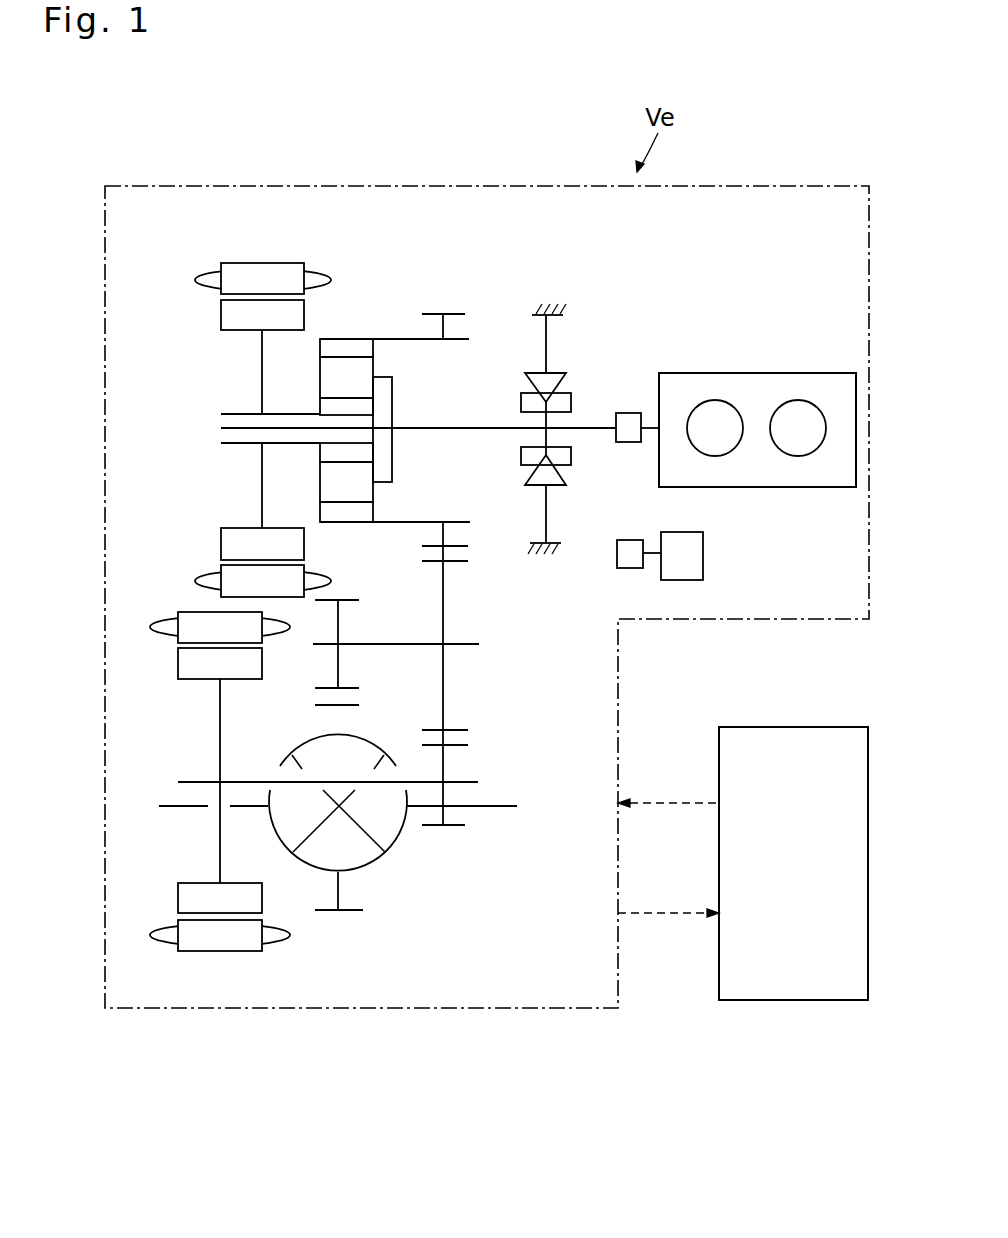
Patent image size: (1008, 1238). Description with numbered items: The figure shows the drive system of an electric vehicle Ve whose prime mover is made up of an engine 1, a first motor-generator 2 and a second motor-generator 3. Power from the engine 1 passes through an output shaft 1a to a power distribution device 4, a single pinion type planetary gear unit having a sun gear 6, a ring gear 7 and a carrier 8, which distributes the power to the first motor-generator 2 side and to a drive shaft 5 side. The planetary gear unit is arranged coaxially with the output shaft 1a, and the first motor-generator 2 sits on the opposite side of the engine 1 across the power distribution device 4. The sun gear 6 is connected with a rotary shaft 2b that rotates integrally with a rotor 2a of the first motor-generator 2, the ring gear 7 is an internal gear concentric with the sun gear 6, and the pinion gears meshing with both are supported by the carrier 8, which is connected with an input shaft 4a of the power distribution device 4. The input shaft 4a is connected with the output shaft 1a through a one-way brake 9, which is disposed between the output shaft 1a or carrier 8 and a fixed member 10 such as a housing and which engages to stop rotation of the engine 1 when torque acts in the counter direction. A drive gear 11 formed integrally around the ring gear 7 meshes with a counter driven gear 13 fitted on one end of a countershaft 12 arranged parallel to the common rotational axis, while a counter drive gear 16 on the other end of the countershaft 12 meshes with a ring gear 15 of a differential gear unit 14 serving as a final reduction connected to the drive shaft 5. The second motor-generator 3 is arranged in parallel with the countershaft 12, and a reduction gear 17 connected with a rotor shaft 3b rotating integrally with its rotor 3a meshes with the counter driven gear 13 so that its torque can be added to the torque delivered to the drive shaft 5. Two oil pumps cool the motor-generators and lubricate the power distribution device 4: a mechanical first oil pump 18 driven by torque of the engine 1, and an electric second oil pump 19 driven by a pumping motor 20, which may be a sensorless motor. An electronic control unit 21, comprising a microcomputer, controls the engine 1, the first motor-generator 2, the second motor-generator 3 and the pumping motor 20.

The engine 1 is at (752, 478).
The output shaft 1a is at (597, 432).
The first motor-generator 2 is at (178, 305).
The rotor 2a is at (222, 548).
The rotary shaft 2b is at (290, 445).
The second motor-generator 3 is at (175, 708).
The rotor 3a is at (180, 898).
The rotor shaft 3b is at (252, 780).
The power distribution device 4 is at (384, 300).
The input shaft 4a is at (456, 427).
The drive shaft 5 is at (168, 805).
The sun gear 6 is at (325, 408).
The ring gear 7 is at (347, 338).
The carrier 8 is at (392, 392).
The one-way brake 9 is at (568, 348).
The fixed member 10 is at (548, 553).
The drive gear 11 is at (437, 313).
The countershaft 12 is at (388, 643).
The counter driven gear 13 is at (425, 560).
The differential gear unit 14 is at (382, 870).
The ring gear 15 is at (328, 915).
The counter drive gear 16 is at (350, 598).
The reduction gear 17 is at (452, 830).
The first oil pump 18 is at (632, 413).
The second oil pump 19 is at (628, 568).
The pumping motor 20 is at (703, 557).
The electronic control unit 21 is at (797, 1003).